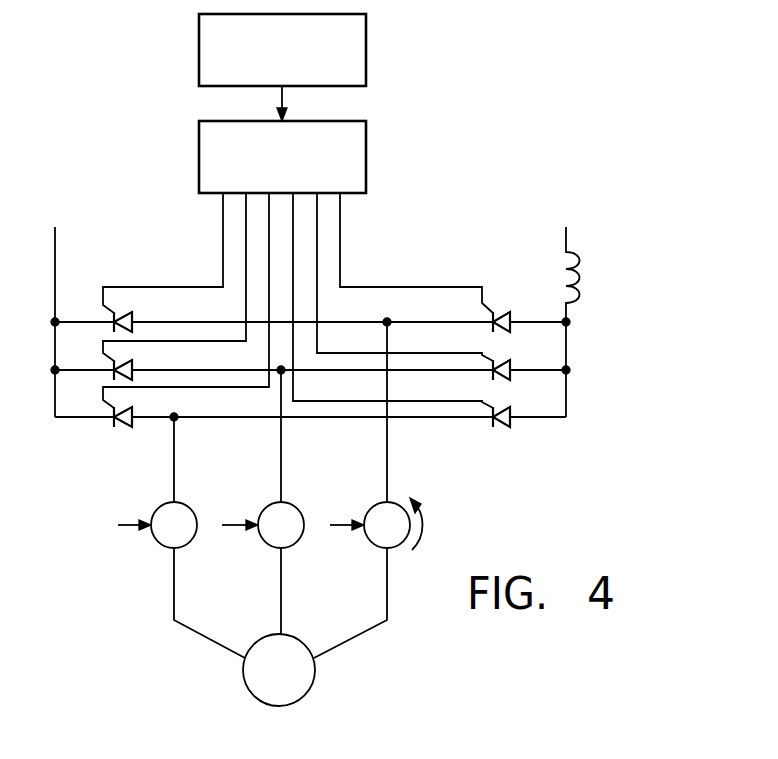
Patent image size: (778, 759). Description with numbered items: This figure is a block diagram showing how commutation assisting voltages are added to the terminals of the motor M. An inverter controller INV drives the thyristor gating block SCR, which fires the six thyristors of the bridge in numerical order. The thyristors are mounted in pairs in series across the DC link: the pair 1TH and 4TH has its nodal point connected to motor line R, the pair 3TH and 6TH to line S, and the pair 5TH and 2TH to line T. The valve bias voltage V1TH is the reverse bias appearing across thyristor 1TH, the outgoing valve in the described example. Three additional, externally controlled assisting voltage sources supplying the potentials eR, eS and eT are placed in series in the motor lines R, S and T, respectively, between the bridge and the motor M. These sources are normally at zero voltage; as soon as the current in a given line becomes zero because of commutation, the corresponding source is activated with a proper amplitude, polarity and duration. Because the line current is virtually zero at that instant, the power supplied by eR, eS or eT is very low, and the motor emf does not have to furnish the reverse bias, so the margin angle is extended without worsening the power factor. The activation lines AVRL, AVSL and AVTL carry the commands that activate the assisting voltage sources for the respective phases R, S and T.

The inverter controller INV is at (282, 50).
The SCR gates SCR is at (282, 157).
The thyristor 1TH is at (223, 212).
The thyristor 3TH is at (246, 238).
The thyristor 5TH is at (269, 266).
The thyristor 4TH is at (340, 212).
The thyristor 6TH is at (317, 240).
The thyristor 2TH is at (293, 267).
The valve bias voltage V1TH is at (66, 296).
The motor line T is at (209, 537).
The motor line S is at (294, 502).
The motor line R is at (367, 490).
The assisting voltage potential eT is at (174, 525).
The assisting voltage potential eS is at (281, 525).
The assisting voltage potential eR is at (393, 524).
The activation line AVTL is at (116, 518).
The activation line AVSL is at (228, 515).
The activation line AVRL is at (336, 515).
The motor M is at (279, 670).